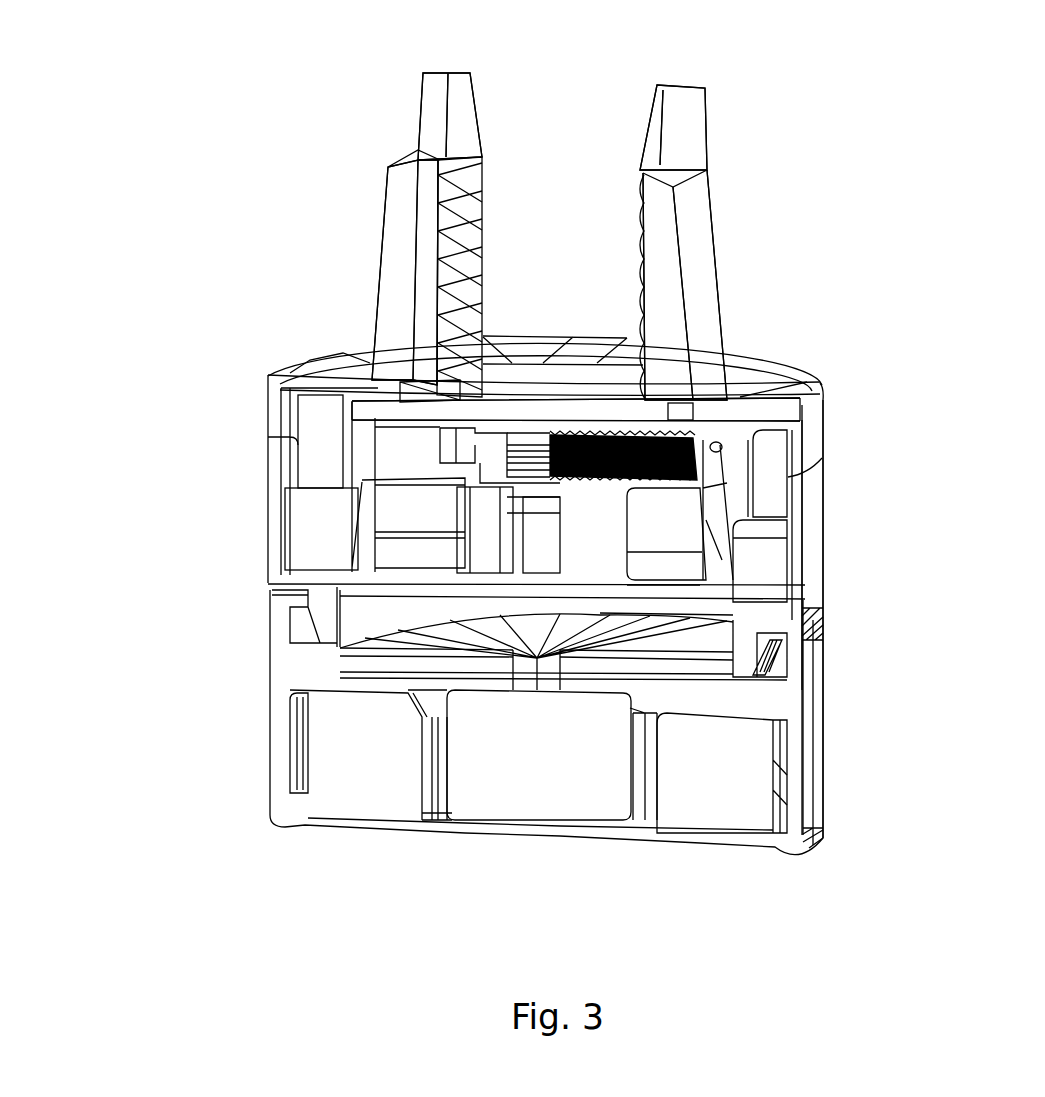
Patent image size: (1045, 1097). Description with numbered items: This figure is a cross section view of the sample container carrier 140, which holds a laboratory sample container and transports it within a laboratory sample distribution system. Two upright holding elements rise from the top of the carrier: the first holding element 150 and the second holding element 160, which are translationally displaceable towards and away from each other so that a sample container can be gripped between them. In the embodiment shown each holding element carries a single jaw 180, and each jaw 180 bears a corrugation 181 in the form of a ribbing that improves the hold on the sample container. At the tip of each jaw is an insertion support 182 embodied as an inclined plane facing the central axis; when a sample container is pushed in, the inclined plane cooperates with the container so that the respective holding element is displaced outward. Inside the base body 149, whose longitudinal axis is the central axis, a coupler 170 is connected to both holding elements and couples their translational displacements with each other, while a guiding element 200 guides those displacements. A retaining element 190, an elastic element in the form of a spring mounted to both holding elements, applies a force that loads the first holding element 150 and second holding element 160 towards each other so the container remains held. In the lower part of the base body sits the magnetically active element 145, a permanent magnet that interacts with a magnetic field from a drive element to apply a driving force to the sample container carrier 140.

The sample container carrier 140 is at (121, 113).
The magnetically active element 145 is at (582, 794).
The base body 149 is at (814, 596).
The first holding element 150 is at (375, 290).
The second holding element 160 is at (722, 295).
The coupler 170 is at (610, 488).
The jaw 180 is at (395, 205).
The corrugation 181 is at (637, 206).
The insertion support 182 is at (456, 88).
The retaining element 190 is at (710, 453).
The guiding element 200 is at (790, 543).